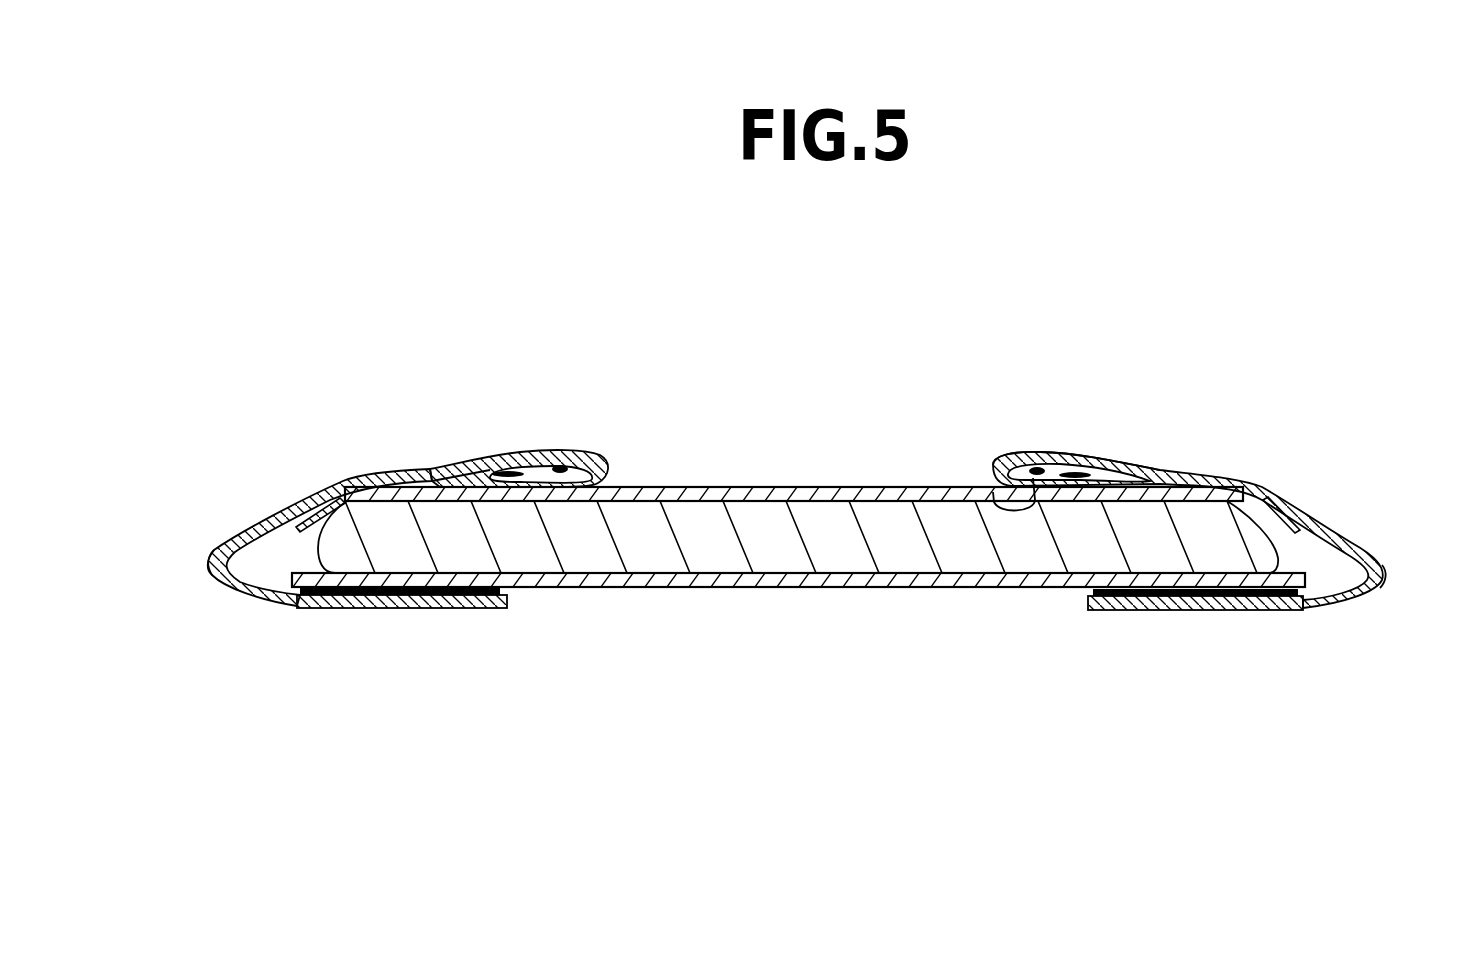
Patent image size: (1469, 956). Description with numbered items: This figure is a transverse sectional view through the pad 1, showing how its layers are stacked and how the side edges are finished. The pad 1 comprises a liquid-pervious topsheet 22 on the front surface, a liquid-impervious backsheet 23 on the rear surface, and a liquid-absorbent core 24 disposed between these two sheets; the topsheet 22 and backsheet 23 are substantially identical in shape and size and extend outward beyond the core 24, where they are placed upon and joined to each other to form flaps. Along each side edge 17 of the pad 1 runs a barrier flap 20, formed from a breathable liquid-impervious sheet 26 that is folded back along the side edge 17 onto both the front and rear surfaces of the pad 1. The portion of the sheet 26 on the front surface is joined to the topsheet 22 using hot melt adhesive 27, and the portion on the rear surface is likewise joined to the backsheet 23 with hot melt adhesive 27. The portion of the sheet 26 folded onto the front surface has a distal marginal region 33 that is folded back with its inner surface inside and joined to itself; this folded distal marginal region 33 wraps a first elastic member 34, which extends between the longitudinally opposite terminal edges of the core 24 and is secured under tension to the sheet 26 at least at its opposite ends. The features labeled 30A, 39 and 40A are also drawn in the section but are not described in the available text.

The pad 1 is at (975, 333).
The side edge 17 is at (210, 566).
The barrier flap 20 is at (384, 452).
The topsheet 22 is at (673, 487).
The backsheet 23 is at (561, 588).
The liquid-absorbent core 24 is at (645, 562).
The breathable liquid-impervious sheet 26 is at (463, 462).
The hot melt adhesive 27 is at (410, 593).
The terminal 30A is at (527, 453).
The distal marginal region 33 is at (985, 488).
The first elastic member 34 is at (560, 457).
The bonding portion 39 is at (993, 462).
The terminal tip 40A is at (603, 458).